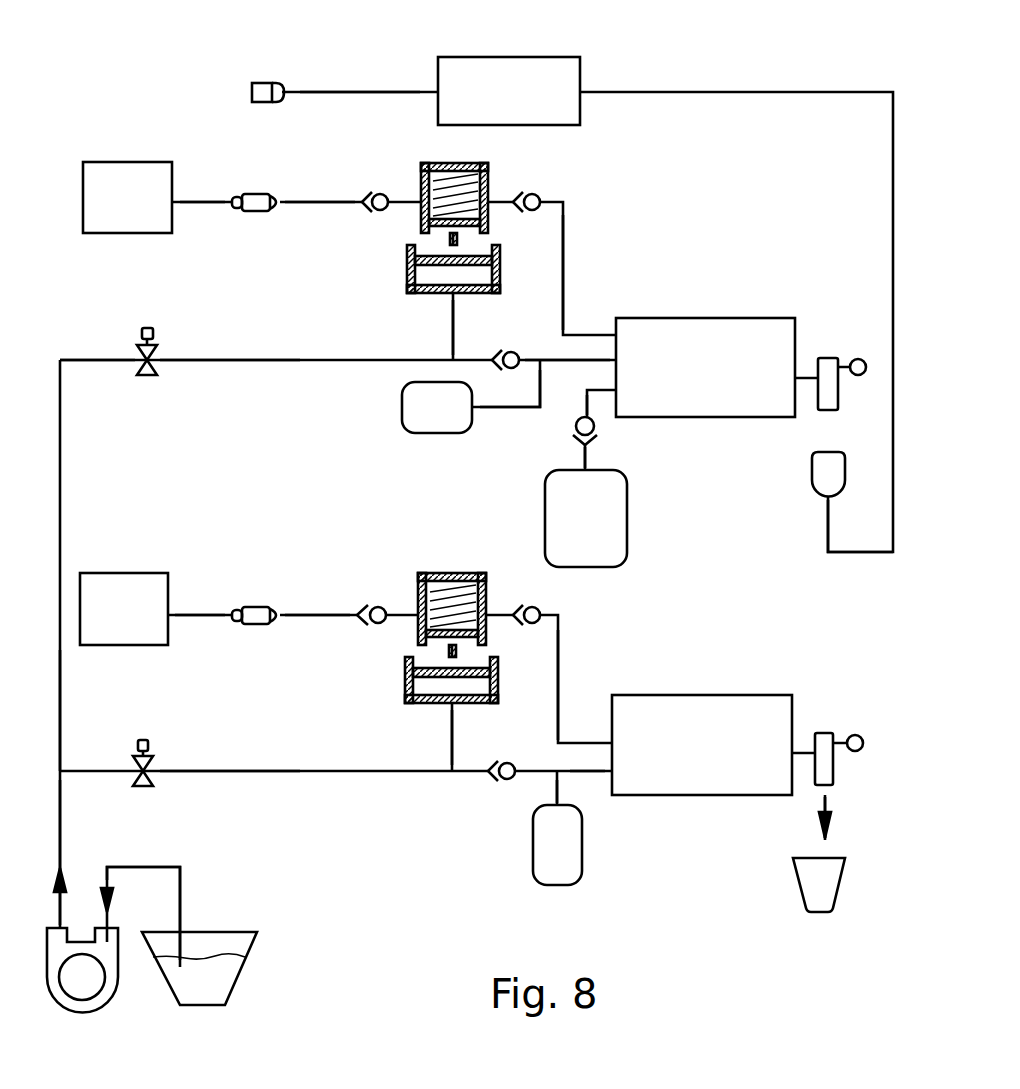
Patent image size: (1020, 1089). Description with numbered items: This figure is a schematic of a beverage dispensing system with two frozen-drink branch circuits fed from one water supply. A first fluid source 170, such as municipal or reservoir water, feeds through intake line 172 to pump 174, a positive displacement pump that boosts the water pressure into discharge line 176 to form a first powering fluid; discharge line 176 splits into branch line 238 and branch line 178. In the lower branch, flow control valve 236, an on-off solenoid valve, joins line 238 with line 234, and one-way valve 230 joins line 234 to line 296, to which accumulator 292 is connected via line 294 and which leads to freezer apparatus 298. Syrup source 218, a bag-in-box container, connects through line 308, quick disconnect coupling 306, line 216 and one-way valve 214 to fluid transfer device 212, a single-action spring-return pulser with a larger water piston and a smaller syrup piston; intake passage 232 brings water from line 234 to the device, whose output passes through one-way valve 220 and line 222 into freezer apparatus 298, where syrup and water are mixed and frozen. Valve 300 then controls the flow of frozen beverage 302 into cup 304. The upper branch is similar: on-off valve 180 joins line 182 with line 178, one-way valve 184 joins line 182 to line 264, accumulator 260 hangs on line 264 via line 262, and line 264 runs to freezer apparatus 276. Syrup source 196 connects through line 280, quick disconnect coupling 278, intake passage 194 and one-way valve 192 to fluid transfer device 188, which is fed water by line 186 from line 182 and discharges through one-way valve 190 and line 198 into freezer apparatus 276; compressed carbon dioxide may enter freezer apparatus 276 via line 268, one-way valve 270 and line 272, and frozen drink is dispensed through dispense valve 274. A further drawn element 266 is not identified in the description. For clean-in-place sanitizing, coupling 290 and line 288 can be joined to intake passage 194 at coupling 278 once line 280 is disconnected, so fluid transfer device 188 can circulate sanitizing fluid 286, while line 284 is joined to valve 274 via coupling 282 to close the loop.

The first fluid source 170 is at (243, 970).
The intake line 172 is at (180, 893).
The pump 174 is at (60, 1003).
The discharge line 176 is at (60, 835).
The branch line 178 is at (97, 360).
The on-off valve 180 is at (147, 378).
The water line 182 is at (233, 360).
The one-way valve 184 is at (532, 322).
The line 186 is at (453, 333).
The fluid transfer device 188 is at (503, 168).
The one-way valve 190 is at (540, 200).
The one-way valve 192 is at (380, 194).
The intake passage 194 is at (305, 205).
The syrup source 196 is at (137, 162).
The line 198 is at (563, 270).
The fluid transfer device 212 is at (470, 558).
The one-way valve 214 is at (378, 625).
The line 216 is at (330, 615).
The syrup source 218 is at (165, 573).
The one-way valve 220 is at (538, 610).
The line 222 is at (558, 665).
The one-way valve 230 is at (500, 780).
The intake passage 232 is at (452, 740).
The water line 234 is at (223, 771).
The flow control valve 236 is at (143, 786).
The branch line 238 is at (88, 771).
The accumulator 260 is at (402, 408).
The line 262 is at (497, 410).
The line 264 is at (576, 365).
The collection reservoir 266 is at (627, 530).
The line 268 is at (587, 455).
The one-way valve 270 is at (597, 437).
The line 272 is at (600, 392).
The dispense valve 274 is at (828, 358).
The freezer apparatus 276 is at (717, 318).
The quick disconnect coupling 278 is at (256, 194).
The line 280 is at (193, 205).
The coupling 282 is at (812, 480).
The line 284 is at (868, 552).
The sanitizing fluid 286 is at (565, 57).
The line 288 is at (386, 92).
The coupling 290 is at (262, 83).
The accumulator 292 is at (582, 862).
The line 294 is at (557, 790).
The line 296 is at (598, 773).
The freezer apparatus 298 is at (692, 695).
The valve 300 is at (830, 733).
The frozen beverage 302 is at (818, 826).
The cup 304 is at (793, 883).
The quick disconnect coupling 306 is at (254, 606).
The line 308 is at (200, 617).